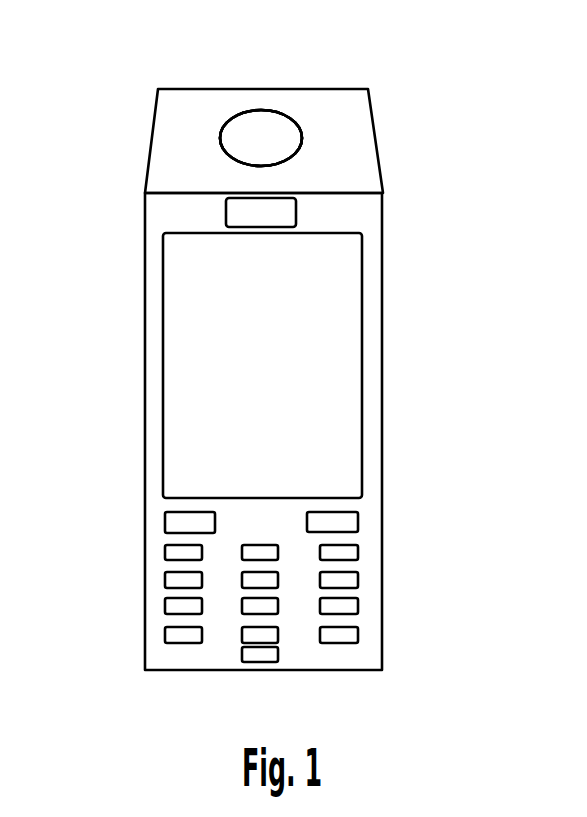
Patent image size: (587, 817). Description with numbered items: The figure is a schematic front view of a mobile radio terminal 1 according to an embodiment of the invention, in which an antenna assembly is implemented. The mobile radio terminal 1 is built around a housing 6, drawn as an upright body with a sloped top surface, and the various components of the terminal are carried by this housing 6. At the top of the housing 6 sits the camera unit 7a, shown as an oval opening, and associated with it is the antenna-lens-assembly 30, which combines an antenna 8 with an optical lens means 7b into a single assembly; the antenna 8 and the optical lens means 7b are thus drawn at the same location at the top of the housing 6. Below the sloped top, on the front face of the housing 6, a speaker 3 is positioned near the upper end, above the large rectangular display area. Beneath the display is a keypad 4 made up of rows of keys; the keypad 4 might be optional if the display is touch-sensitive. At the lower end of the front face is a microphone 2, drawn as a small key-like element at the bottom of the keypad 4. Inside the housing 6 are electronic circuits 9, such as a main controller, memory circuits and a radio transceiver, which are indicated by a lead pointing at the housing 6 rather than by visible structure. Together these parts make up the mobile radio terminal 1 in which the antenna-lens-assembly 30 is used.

The mobile radio terminal 1 is at (424, 239).
The microphone 2 is at (263, 662).
The speaker 3 is at (248, 212).
The keypad 4 is at (165, 542).
The housing 6 is at (377, 133).
The camera unit 7a is at (265, 108).
The optical lens means 7b is at (255, 130).
The antenna 8 is at (220, 133).
The electronic circuits 9 is at (383, 503).
The antenna-lens-assembly 30 is at (225, 152).